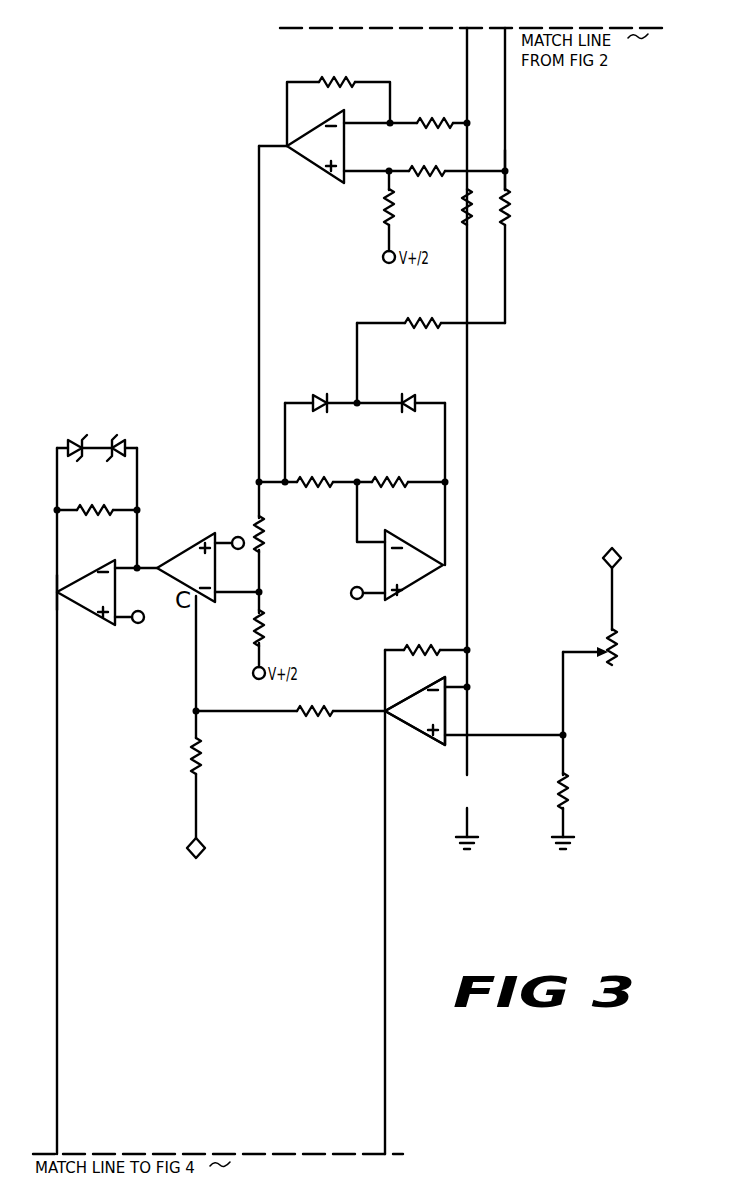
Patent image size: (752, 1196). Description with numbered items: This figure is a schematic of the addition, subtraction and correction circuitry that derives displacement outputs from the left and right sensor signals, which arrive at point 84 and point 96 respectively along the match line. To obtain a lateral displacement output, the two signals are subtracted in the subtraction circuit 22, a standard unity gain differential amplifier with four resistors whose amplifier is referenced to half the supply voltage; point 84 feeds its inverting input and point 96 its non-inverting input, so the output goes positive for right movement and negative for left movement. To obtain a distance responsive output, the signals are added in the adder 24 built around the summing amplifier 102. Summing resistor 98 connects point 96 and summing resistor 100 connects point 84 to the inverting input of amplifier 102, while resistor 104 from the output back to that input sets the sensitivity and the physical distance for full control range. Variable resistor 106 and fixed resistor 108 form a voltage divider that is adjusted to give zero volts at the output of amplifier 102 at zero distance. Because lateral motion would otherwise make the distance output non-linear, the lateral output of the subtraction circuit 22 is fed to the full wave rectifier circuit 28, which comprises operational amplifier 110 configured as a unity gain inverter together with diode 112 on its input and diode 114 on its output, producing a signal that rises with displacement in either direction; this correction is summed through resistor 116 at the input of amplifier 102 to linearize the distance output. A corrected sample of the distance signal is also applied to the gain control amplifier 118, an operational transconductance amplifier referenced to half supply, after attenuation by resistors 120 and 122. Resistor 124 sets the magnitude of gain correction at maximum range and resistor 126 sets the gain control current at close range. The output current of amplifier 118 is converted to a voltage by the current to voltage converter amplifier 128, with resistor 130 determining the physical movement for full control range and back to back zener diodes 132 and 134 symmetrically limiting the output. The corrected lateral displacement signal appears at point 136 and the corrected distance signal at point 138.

The subtraction circuit 22 is at (270, 116).
The adder 24 is at (375, 696).
The full wave rectifier circuit 28 is at (367, 622).
The point 84 is at (464, 120).
The point 96 is at (512, 168).
The summing resistor 98 is at (514, 213).
The summing resistor 100 is at (463, 214).
The summing amplifier 102 is at (407, 729).
The resistor 104 is at (404, 650).
The variable resistor 106 is at (617, 658).
The fixed resistor 108 is at (571, 803).
The operational amplifier 110 is at (419, 544).
The diode 112 is at (307, 393).
The diode 114 is at (405, 395).
The resistor 116 is at (408, 320).
The gain control amplifier 118 is at (204, 539).
The resistor 120 is at (264, 538).
The resistor 122 is at (264, 638).
The resistor 124 is at (305, 713).
The resistor 126 is at (202, 758).
The current to voltage converter amplifier 128 is at (83, 614).
The resistor 130 is at (84, 508).
The zener diode 132 is at (68, 438).
The zener diode 134 is at (129, 438).
The point 136 is at (54, 590).
The point 138 is at (383, 717).